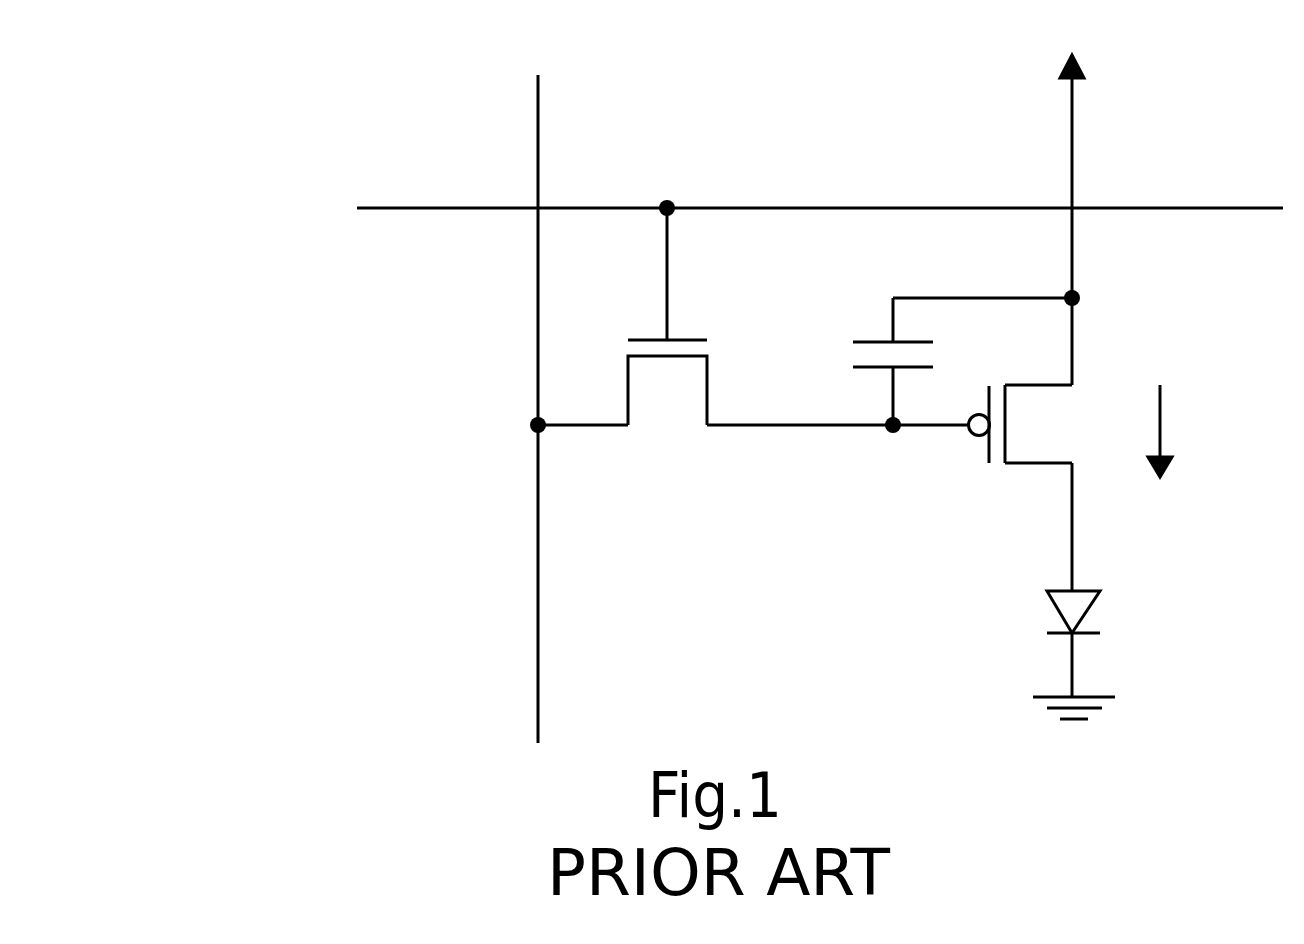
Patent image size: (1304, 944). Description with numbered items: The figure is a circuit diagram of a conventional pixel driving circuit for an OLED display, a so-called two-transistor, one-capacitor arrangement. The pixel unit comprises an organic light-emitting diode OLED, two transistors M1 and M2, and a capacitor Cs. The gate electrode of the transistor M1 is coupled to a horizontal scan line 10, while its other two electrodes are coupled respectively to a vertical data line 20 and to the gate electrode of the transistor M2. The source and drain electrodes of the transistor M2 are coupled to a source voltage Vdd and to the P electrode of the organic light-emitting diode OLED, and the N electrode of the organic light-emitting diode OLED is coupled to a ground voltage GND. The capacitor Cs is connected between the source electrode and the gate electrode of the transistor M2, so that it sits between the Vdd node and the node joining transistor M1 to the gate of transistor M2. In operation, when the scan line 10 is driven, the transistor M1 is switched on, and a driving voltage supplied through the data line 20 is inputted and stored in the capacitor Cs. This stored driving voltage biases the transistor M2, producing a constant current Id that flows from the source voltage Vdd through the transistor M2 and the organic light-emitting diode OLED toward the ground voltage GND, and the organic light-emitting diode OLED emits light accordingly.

The scan line 10 is at (485, 208).
The data line 20 is at (538, 153).
The transistor M1 is at (753, 345).
The transistor M2 is at (1051, 424).
The capacitor Cs is at (935, 361).
The source voltage Vdd is at (1070, 196).
The constant current Id is at (1173, 431).
The organic light-emitting diode OLED is at (1132, 580).
The ground voltage GND is at (1026, 708).